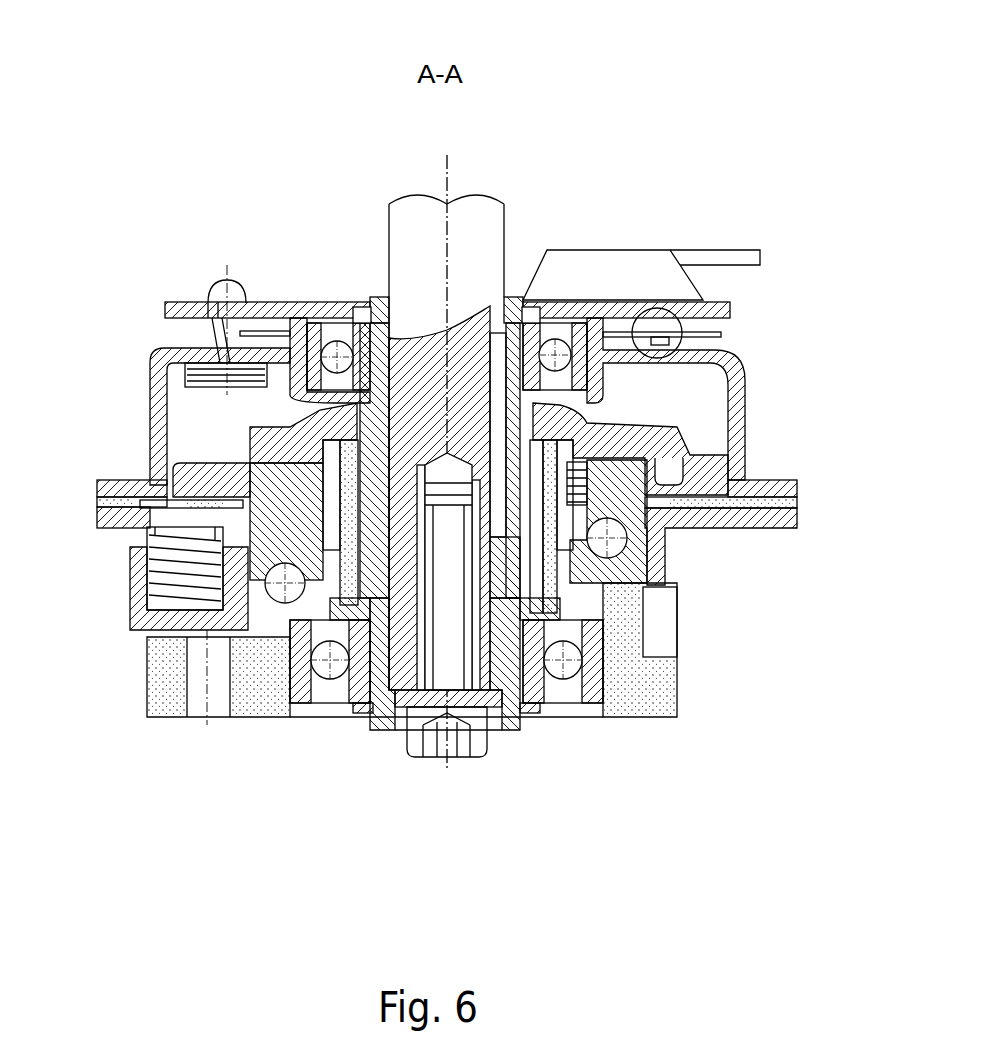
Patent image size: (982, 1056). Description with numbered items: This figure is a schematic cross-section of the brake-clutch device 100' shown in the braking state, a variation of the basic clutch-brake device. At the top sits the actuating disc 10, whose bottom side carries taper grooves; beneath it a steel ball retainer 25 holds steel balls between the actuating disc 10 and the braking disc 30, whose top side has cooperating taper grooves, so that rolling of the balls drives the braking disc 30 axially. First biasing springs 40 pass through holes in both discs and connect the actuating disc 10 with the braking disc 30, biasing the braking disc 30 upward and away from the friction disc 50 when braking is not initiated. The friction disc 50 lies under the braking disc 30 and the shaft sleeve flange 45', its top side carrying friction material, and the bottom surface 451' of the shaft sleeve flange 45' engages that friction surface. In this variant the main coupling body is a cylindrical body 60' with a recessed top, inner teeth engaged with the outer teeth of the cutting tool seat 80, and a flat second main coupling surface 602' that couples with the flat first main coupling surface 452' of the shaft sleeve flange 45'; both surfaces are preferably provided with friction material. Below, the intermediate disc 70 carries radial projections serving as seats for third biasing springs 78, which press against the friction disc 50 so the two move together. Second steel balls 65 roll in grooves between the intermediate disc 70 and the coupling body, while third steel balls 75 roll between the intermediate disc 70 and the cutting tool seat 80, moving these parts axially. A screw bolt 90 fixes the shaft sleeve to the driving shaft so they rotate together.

The brake-clutch device 100' is at (507, 353).
The actuating disc 10 is at (717, 307).
The steel ball retainer 25 is at (723, 334).
The braking disc 30 is at (740, 413).
The first biasing springs 40 is at (183, 385).
The shaft sleeve flange 45' is at (531, 444).
The bottom surface of the shaft sleeve flange 451' is at (809, 416).
The first main coupling surface 452' is at (621, 326).
The friction disc 50 is at (797, 510).
The cylindrical body 60' is at (493, 540).
The second steel balls 65 is at (640, 579).
The intermediate disc 70 is at (646, 590).
The third steel balls 75 is at (280, 593).
The third biasing springs 78 is at (153, 593).
The cutting tool seat 80 is at (675, 667).
The screw bolt 90 is at (490, 745).
The second main coupling surface 602' is at (688, 337).